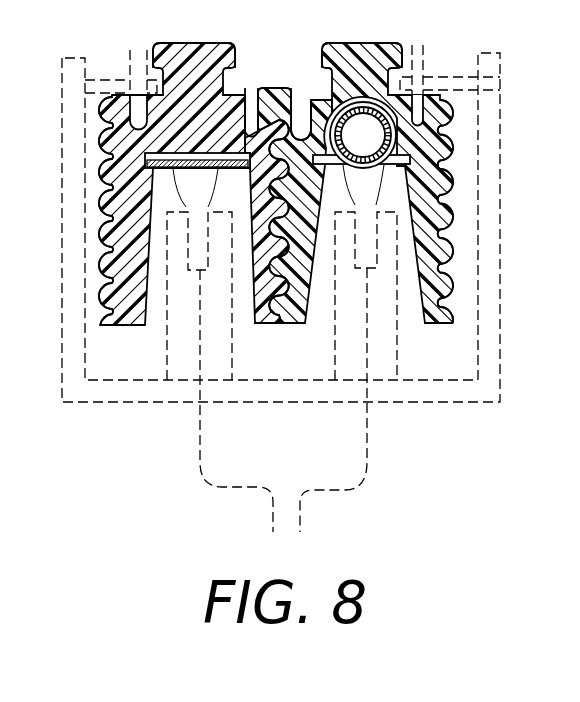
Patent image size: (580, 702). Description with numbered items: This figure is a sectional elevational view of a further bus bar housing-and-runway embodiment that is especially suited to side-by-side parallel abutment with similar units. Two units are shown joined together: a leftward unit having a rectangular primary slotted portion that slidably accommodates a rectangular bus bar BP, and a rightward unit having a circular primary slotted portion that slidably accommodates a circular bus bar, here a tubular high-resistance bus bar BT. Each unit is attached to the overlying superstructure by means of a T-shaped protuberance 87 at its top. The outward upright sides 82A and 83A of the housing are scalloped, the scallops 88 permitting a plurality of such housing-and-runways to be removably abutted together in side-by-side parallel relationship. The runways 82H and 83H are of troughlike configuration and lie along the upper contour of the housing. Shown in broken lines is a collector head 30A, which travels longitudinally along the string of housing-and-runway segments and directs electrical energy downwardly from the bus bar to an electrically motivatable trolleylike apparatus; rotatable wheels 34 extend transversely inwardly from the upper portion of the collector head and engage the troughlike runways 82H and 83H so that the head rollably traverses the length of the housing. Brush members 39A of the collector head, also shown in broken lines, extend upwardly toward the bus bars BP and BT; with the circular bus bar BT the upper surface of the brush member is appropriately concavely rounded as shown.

The frame 30A is at (500, 267).
The rotatable wheel 34 is at (140, 45).
The terminal insert 39A is at (200, 457).
The scalloped upright side 82A is at (103, 172).
The scalloped upright side 83A is at (448, 122).
The runway 82H is at (316, 110).
The runway 83H is at (246, 118).
The T-shaped protuberance 87 is at (180, 43).
The scalloped edge 88 is at (103, 100).
The rectangular bus bar BP is at (197, 180).
The tubular high-resistance bus bar BT is at (361, 180).